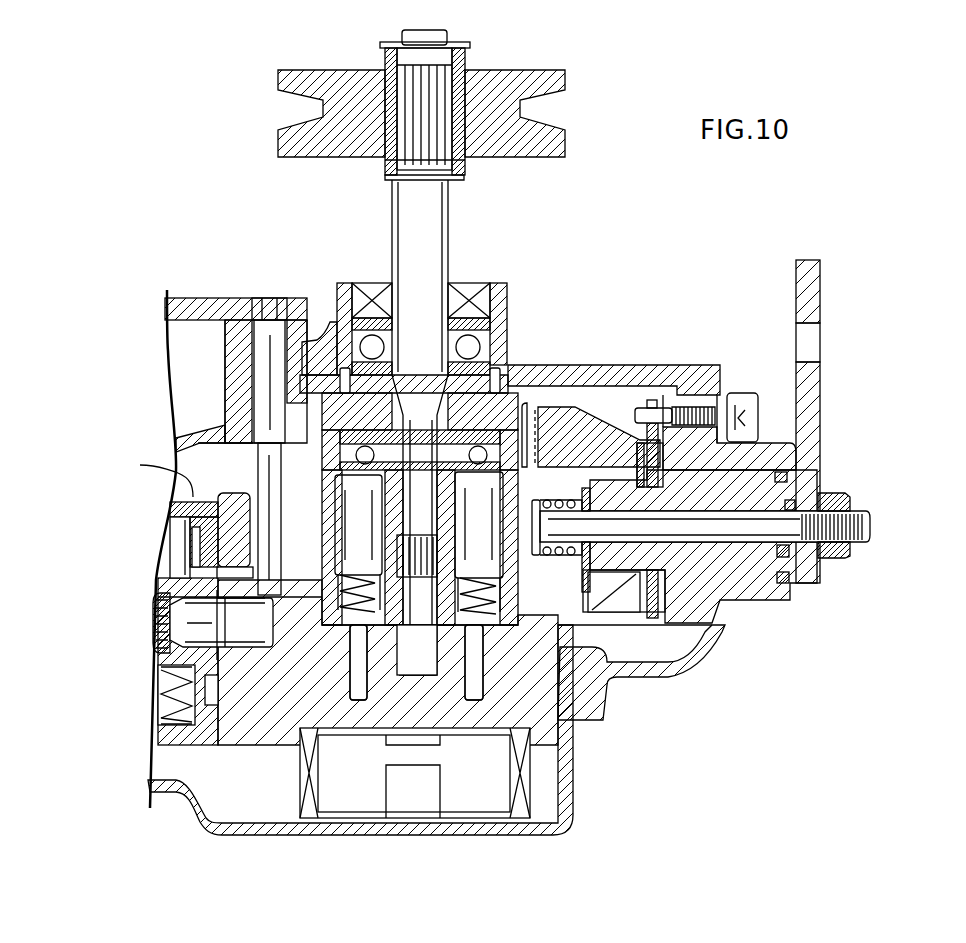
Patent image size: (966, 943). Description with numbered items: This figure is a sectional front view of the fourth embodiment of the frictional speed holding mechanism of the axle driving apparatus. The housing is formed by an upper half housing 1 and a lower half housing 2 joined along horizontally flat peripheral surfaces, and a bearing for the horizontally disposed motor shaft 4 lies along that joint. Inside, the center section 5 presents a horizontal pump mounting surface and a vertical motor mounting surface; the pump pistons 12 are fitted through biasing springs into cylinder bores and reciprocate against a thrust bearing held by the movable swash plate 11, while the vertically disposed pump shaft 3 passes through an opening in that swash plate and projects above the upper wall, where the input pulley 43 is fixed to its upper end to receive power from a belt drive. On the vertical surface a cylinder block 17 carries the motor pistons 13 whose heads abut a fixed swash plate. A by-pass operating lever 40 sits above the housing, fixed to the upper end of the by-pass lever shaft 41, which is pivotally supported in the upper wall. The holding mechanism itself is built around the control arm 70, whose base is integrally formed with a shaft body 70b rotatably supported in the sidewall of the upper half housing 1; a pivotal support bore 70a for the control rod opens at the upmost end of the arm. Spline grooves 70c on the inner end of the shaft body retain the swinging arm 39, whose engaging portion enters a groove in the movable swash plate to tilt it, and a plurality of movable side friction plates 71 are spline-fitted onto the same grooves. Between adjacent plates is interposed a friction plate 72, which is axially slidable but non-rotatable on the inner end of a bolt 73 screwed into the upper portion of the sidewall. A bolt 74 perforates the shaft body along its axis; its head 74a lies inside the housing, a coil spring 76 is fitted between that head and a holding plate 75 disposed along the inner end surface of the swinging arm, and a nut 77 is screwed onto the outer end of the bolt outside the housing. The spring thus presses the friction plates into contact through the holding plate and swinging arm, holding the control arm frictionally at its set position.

The upper half housing 1 is at (199, 433).
The lower half housing 2 is at (174, 795).
The pump shaft 3 is at (450, 205).
The motor shaft 4 is at (153, 612).
The center section 5 is at (265, 740).
The movable swash plate 11 is at (330, 470).
The pistons 12 is at (368, 565).
The pistons 13 is at (167, 550).
The cylinder block 17 is at (150, 588).
The swinging arm 39 is at (568, 410).
The by-pass operating lever 40 is at (205, 298).
The by-pass lever shaft 41 is at (272, 300).
The input pulley 43 is at (560, 72).
The control arm 70 is at (820, 400).
The pivotal support bore 70a is at (820, 330).
The shaft body 70b is at (760, 572).
The spline grooves 70c is at (637, 613).
The movable side friction plates 71 is at (673, 625).
The friction plate 72 is at (652, 402).
The bolt 73 is at (740, 393).
The bolt 74 is at (872, 525).
The head 74a is at (535, 560).
The holding plate 75 is at (586, 592).
The coil spring 76 is at (557, 557).
The nut 77 is at (850, 548).